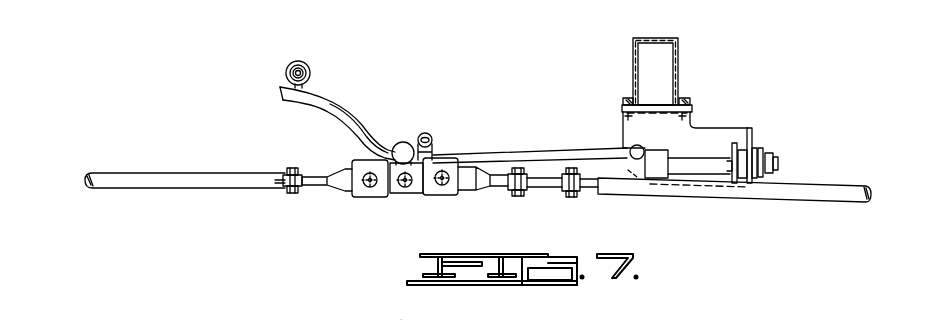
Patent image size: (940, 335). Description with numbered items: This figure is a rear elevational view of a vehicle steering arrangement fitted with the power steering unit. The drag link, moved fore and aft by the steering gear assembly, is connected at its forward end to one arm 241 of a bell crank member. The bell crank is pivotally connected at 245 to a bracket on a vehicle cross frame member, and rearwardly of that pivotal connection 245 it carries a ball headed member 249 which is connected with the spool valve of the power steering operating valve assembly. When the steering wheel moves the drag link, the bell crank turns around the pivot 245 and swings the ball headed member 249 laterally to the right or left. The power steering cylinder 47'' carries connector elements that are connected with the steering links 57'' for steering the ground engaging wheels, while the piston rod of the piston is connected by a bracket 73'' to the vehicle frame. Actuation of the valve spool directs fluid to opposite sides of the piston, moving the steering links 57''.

The arm of bell crank member 241 is at (350, 112).
The pivotal connection 245 is at (427, 134).
The ball headed member 249 is at (407, 197).
The cylinder 47'' is at (550, 149).
The steering links 57'' is at (478, 199).
The bracket 73'' is at (770, 146).